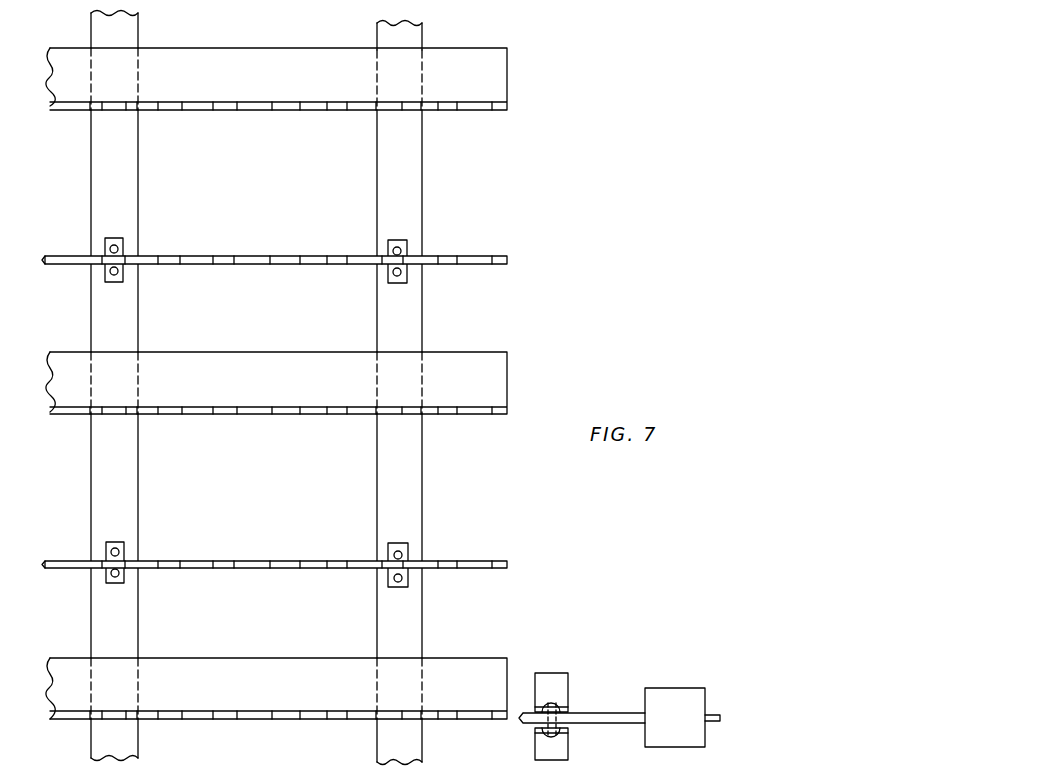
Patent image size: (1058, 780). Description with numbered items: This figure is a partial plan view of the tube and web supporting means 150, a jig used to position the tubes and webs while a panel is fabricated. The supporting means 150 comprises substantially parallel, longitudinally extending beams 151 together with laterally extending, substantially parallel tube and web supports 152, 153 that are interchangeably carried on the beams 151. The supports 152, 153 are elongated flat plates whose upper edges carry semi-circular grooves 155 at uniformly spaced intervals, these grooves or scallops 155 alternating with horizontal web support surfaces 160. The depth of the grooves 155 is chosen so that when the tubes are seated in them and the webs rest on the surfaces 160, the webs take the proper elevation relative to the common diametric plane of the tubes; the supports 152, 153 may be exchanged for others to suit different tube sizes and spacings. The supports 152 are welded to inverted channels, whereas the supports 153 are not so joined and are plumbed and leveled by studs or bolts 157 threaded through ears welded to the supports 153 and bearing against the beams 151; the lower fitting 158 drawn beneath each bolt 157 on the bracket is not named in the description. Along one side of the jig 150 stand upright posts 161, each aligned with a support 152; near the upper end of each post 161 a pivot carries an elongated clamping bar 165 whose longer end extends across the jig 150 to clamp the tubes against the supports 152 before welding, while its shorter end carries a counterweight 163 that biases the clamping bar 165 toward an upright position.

The supporting means 150 is at (492, 339).
The beams 151 is at (118, 468).
The tube and web supports 152 is at (497, 260).
The tube and web supports 153 is at (312, 580).
The semi-circular grooves 155 is at (193, 715).
The studs or bolts 157 is at (117, 543).
The lower bracket 158 is at (115, 583).
The horizontal web support surfaces 160 is at (287, 719).
The upright posts 161 is at (563, 710).
The counterweights 163 is at (673, 695).
The clamping bar 165 is at (613, 725).